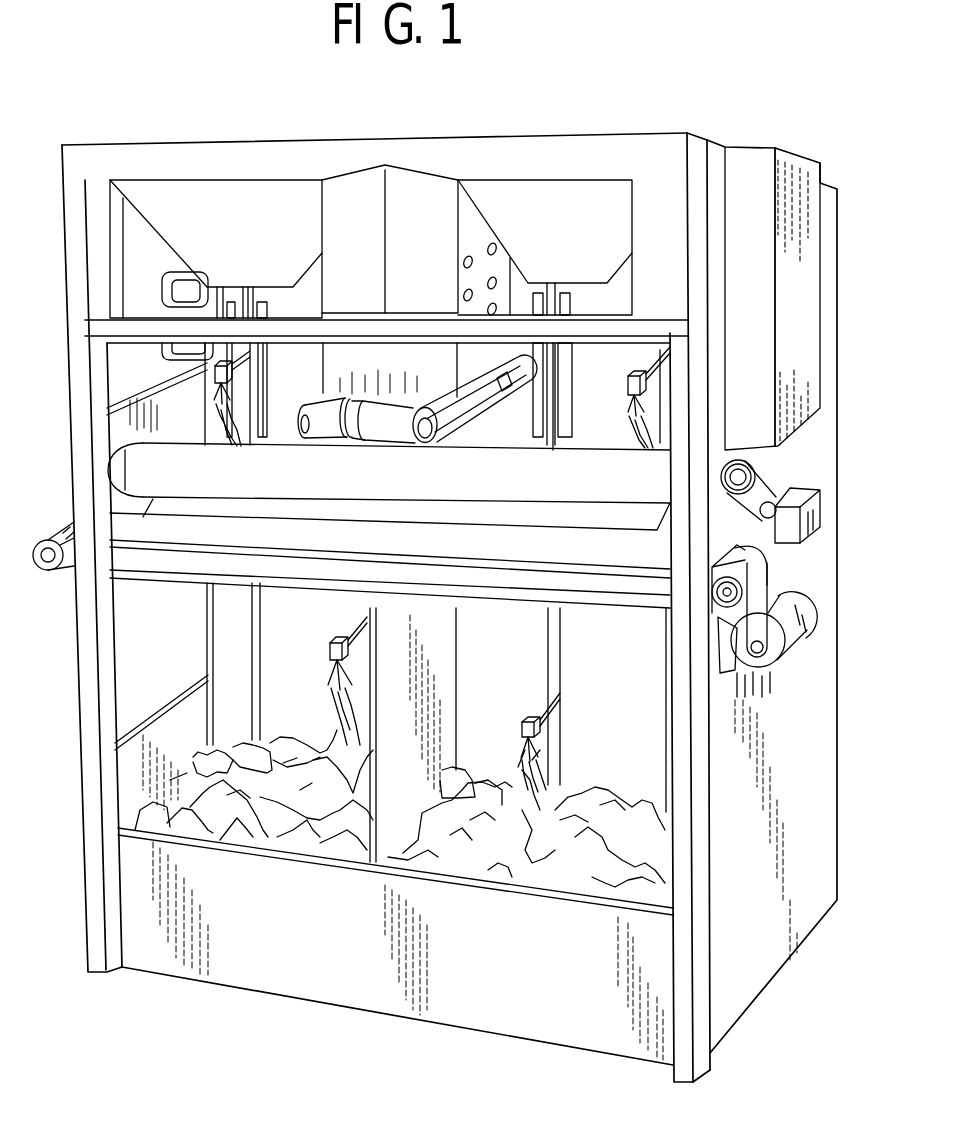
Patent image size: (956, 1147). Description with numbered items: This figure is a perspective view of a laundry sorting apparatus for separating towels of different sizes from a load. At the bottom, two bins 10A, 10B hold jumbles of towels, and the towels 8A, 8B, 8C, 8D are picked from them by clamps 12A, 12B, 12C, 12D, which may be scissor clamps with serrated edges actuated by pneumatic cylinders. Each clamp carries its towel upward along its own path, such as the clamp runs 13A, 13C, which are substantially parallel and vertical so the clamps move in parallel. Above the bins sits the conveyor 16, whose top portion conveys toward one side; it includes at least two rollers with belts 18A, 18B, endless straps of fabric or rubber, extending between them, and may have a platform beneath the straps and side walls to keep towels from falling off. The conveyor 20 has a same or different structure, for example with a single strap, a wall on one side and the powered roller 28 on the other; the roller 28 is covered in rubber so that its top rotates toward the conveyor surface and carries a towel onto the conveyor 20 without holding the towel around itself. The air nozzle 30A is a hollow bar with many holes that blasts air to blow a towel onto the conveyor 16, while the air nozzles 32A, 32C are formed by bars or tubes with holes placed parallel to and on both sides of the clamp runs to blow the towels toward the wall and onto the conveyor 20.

The towel 8A is at (233, 428).
The towel 8B is at (345, 717).
The towel 8C is at (532, 793).
The towel 8D is at (637, 437).
The bin 10A is at (265, 830).
The bin 10B is at (555, 870).
The clamp 12A is at (228, 372).
The clamp 12B is at (330, 650).
The clamp 12C is at (527, 731).
The clamp 12D is at (640, 375).
The clamp run 13A is at (250, 643).
The clamp run 13C is at (553, 662).
The conveyor 16 is at (374, 440).
The belt 18A is at (323, 430).
The belt 18B is at (393, 430).
The conveyor 20 is at (180, 530).
The roller 28 is at (570, 478).
The air nozzle 30A is at (176, 276).
The air nozzle 32A is at (261, 302).
The air nozzle 32C is at (567, 293).